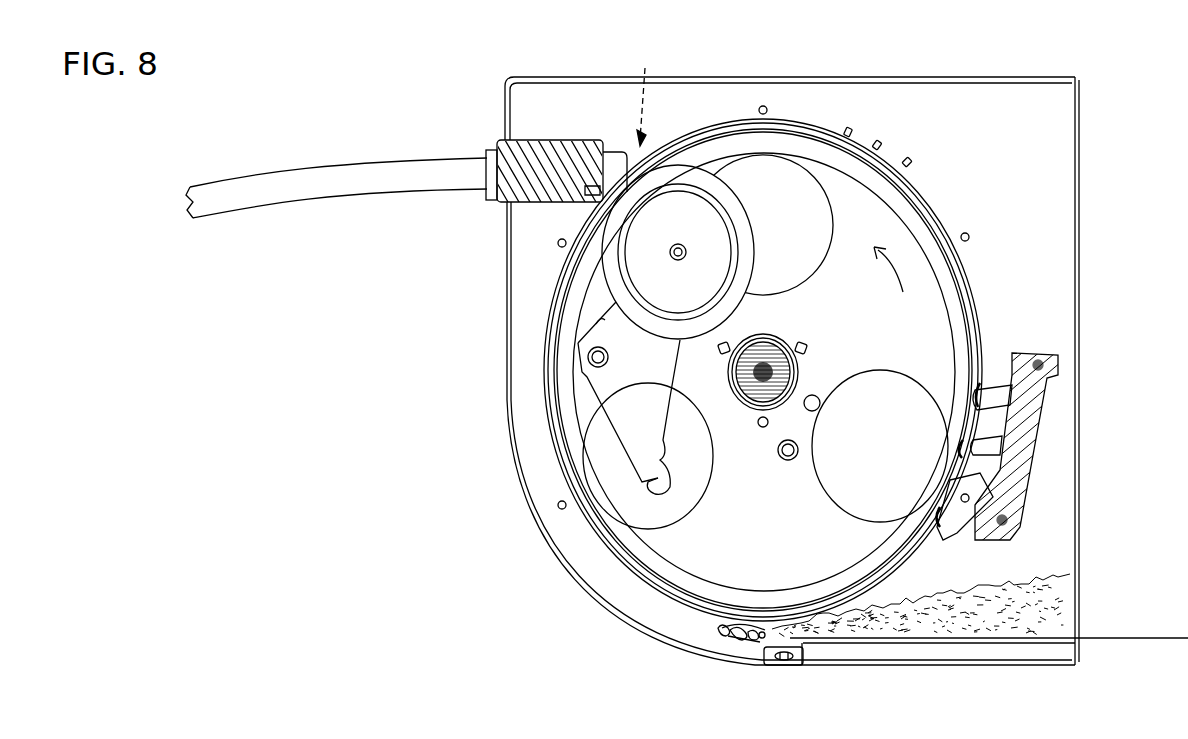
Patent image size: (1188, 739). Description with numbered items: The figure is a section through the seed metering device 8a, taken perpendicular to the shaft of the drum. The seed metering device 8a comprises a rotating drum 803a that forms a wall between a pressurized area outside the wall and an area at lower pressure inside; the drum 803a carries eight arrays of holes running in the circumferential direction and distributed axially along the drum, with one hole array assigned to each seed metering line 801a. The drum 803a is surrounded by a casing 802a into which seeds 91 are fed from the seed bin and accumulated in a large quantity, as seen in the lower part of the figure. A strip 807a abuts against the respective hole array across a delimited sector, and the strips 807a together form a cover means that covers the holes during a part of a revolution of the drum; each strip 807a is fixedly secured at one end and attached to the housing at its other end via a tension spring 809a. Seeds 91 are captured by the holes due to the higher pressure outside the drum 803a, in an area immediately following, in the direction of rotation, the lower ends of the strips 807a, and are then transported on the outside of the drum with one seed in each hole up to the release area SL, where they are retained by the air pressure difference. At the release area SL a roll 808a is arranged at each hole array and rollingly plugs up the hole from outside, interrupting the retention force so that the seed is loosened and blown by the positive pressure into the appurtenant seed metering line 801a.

The seed metering device 8a is at (395, 436).
The seed metering line 801a is at (408, 178).
The casing 802a is at (1080, 272).
The rotating drum 803a is at (788, 118).
The strip 807a is at (612, 562).
The roll 808a is at (620, 262).
The tension spring 809a is at (735, 637).
The seeds 91 is at (907, 157).
The release area SL is at (645, 92).